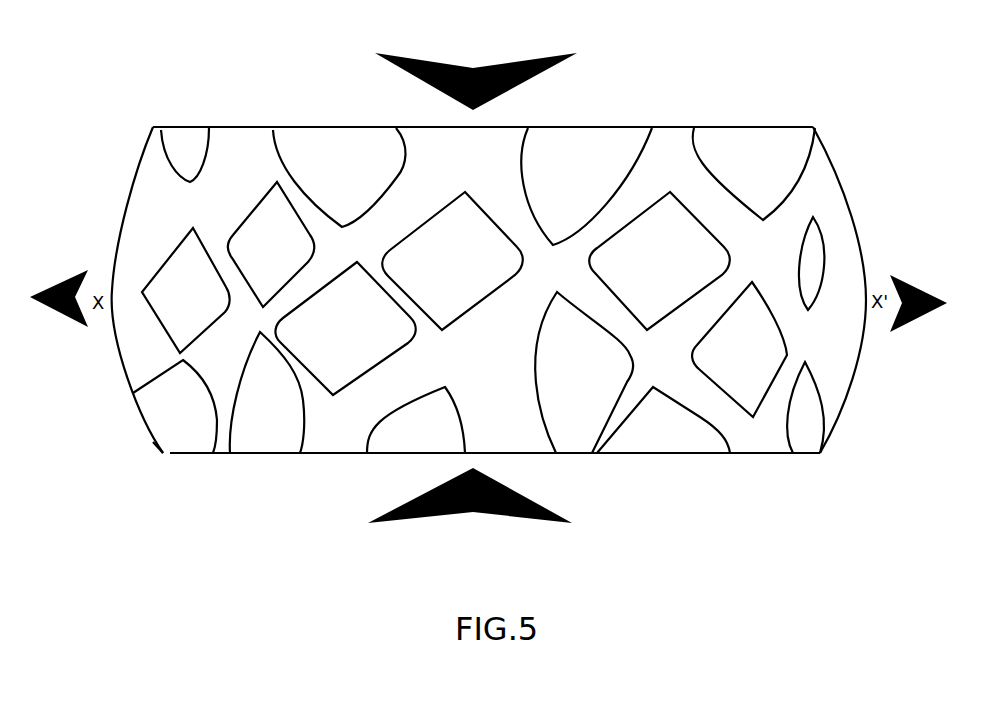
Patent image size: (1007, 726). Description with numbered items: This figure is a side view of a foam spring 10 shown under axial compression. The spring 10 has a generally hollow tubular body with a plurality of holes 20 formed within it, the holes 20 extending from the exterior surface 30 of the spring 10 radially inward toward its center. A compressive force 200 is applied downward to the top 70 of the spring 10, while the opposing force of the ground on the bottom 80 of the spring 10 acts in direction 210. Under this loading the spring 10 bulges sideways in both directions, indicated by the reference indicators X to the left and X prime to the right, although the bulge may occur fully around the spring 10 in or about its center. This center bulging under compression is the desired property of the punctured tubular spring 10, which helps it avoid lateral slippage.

The foam spring 10 is at (849, 161).
The holes 20 is at (313, 138).
The exterior surface 30 is at (702, 186).
The top 70 is at (232, 120).
The bottom 80 is at (305, 459).
The compressive force 200 is at (492, 41).
The direction of opposing force 210 is at (489, 563).